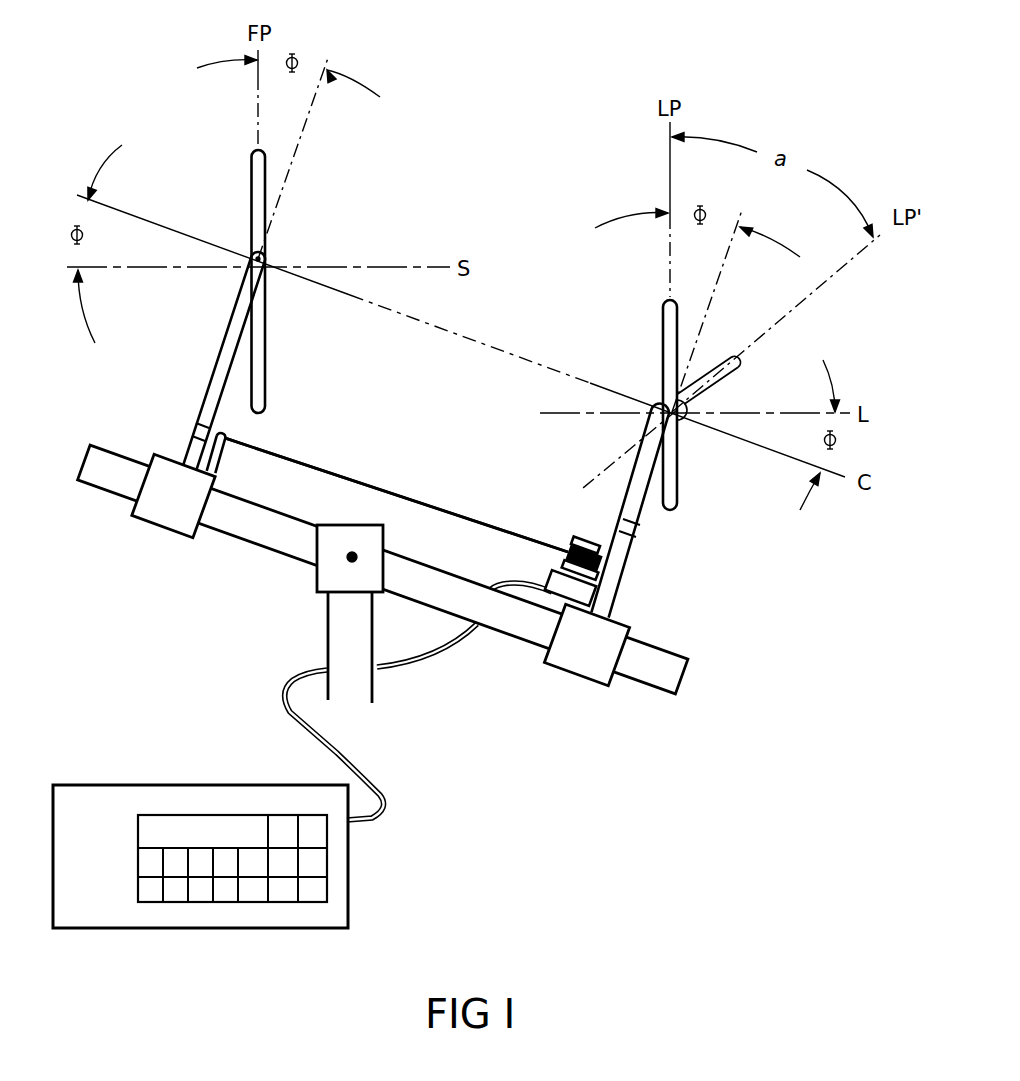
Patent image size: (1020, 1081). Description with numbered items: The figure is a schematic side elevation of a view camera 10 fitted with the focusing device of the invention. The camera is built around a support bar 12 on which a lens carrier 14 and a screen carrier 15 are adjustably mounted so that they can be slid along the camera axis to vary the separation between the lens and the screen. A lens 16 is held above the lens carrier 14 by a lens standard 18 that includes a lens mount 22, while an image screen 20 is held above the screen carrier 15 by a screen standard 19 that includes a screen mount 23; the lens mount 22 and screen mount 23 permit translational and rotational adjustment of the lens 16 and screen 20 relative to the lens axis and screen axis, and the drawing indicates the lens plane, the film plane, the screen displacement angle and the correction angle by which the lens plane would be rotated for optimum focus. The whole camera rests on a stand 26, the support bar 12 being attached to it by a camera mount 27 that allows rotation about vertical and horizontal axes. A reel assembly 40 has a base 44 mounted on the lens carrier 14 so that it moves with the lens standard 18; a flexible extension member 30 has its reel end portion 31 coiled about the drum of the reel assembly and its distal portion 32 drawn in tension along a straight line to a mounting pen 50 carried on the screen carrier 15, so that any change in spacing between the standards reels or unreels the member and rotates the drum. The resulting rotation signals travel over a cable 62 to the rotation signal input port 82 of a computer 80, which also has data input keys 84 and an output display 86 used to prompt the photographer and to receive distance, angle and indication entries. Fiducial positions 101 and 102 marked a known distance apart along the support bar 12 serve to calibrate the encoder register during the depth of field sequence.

The view camera 10 is at (516, 143).
The support bar 12 is at (667, 670).
The lens carrier 14 is at (583, 592).
The screen carrier 15 is at (193, 533).
The lens 16 is at (676, 488).
The lens standard 18 is at (607, 587).
The screen standard 19 is at (193, 442).
The image screen 20 is at (258, 342).
The lens mount 22 is at (677, 488).
The screen mount 23 is at (265, 252).
The stand 26 is at (342, 678).
The camera mount 27 is at (317, 543).
The flexible extension member 30 is at (428, 500).
The reel end portion 31 is at (597, 568).
The distal portion 32 is at (333, 418).
The reel assembly 40 is at (576, 535).
The base 44 is at (592, 665).
The mounting pen 50 is at (220, 447).
The cable 62 is at (358, 773).
The computer 80 is at (200, 829).
The rotation signal input port 82 is at (347, 827).
The data input keys 84 is at (278, 890).
The output display 86 is at (255, 830).
The fiducial position 101 is at (183, 503).
The fiducial position 102 is at (547, 652).